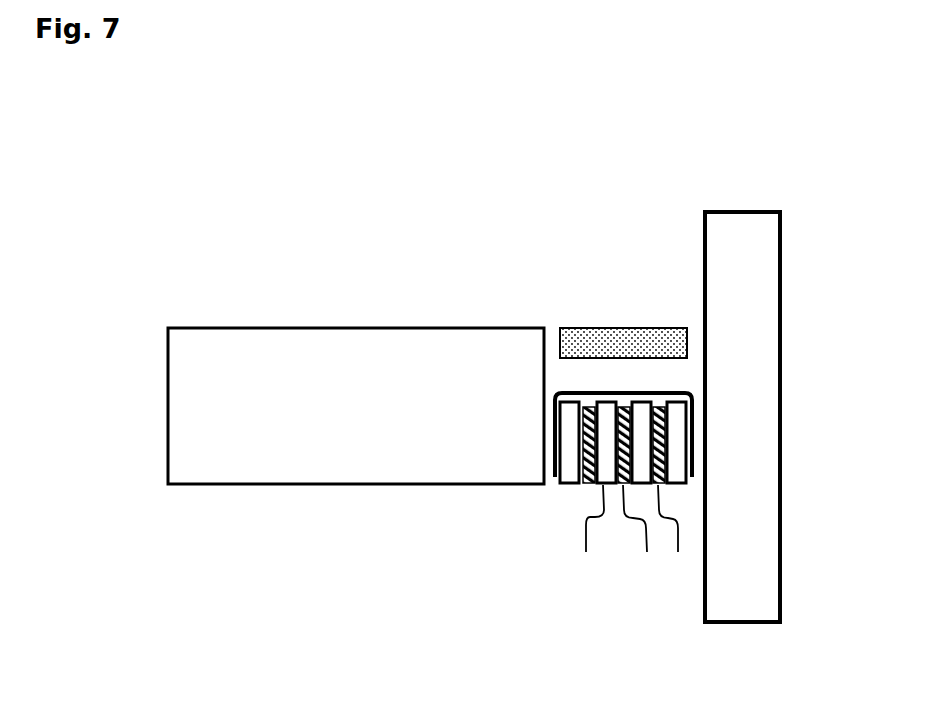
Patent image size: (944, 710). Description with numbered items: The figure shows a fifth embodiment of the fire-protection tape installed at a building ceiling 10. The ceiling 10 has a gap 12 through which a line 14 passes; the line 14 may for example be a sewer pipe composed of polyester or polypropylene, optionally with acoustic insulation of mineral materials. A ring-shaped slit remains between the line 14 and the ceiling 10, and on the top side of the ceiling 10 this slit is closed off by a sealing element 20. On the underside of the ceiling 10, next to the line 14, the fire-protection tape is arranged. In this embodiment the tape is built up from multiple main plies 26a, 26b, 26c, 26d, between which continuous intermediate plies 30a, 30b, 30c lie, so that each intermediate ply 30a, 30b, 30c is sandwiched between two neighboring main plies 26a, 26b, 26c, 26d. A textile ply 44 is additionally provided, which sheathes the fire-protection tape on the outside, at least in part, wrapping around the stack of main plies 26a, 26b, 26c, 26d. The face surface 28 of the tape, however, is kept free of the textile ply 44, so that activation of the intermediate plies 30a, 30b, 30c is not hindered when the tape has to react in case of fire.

The ceiling 10 is at (275, 357).
The gap 12 is at (599, 230).
The line 14 is at (737, 228).
The sealing element 20 is at (625, 338).
The main ply 26a is at (568, 422).
The main ply 26b is at (605, 468).
The main ply 26c is at (642, 468).
The main ply 26d is at (677, 422).
The face surface 28 is at (562, 506).
The intermediate ply 30a is at (591, 537).
The intermediate ply 30b is at (642, 537).
The intermediate ply 30c is at (681, 537).
The textile ply 44 is at (688, 380).